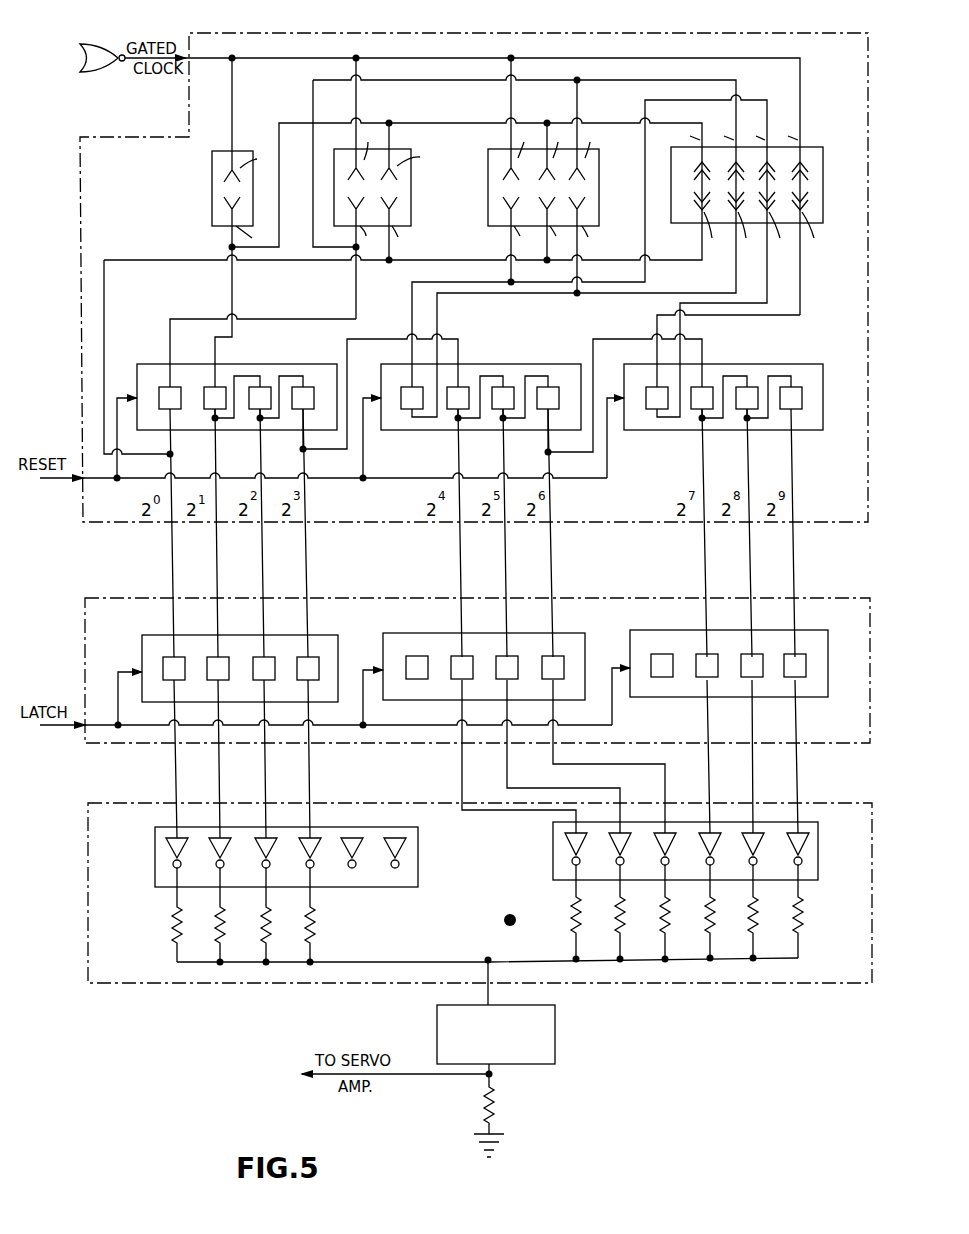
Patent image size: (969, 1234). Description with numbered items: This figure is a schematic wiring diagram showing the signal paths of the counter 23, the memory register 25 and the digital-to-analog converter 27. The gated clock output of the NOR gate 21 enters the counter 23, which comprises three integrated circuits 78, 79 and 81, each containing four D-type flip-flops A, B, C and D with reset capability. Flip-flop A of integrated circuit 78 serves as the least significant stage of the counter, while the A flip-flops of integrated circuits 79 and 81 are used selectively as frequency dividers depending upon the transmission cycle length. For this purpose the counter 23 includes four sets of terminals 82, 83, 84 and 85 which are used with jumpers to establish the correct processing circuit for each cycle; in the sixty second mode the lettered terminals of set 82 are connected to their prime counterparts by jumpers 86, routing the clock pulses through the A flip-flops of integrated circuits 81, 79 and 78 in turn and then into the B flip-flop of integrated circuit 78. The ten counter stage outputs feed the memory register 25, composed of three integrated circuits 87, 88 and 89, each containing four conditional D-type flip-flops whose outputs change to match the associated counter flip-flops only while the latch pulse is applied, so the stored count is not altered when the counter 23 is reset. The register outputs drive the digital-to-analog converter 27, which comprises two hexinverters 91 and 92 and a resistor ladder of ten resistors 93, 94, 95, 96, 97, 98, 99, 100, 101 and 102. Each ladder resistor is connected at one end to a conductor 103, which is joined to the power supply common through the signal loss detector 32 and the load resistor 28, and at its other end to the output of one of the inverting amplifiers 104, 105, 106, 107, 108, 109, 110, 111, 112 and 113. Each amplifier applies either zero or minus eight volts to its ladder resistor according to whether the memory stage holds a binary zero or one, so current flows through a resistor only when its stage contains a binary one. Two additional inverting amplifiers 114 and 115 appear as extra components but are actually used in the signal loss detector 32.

The NOR gate 21 is at (97, 75).
The counter 23 is at (566, 35).
The memory register 25 is at (100, 596).
The digital-to-analog converter 27 is at (86, 894).
The load resistor 28 is at (496, 1113).
The signal loss detector 32 is at (555, 1055).
The integrated circuit 78 is at (275, 364).
The integrated circuit 79 is at (491, 364).
The integrated circuit 81 is at (736, 364).
The set of terminals 82 is at (763, 188).
The set of terminals 83 is at (488, 192).
The set of terminals 84 is at (411, 206).
The set of terminals 85 is at (212, 187).
The jumpers 86 is at (800, 190).
The integrated circuit 87 is at (142, 636).
The integrated circuit 88 is at (385, 633).
The integrated circuit 89 is at (638, 641).
The hexinverter 91 is at (551, 851).
The hexinverter 92 is at (418, 848).
The ladder resistor 93 is at (803, 918).
The ladder resistor 94 is at (758, 918).
The ladder resistor 95 is at (715, 918).
The ladder resistor 96 is at (670, 918).
The ladder resistor 97 is at (625, 918).
The ladder resistor 98 is at (581, 918).
The ladder resistor 99 is at (315, 932).
The ladder resistor 100 is at (271, 925).
The ladder resistor 101 is at (225, 925).
The ladder resistor 102 is at (182, 925).
The conductor 103 is at (412, 960).
The inverting amplifier 104 is at (803, 842).
The inverting amplifier 105 is at (758, 842).
The inverting amplifier 106 is at (715, 842).
The inverting amplifier 107 is at (670, 842).
The inverting amplifier 108 is at (625, 842).
The inverting amplifier 109 is at (581, 842).
The inverting amplifier 110 is at (315, 846).
The inverting amplifier 111 is at (271, 846).
The inverting amplifier 112 is at (225, 846).
The inverting amplifier 113 is at (182, 846).
The inverting amplifier 114 is at (400, 848).
The inverting amplifier 115 is at (357, 846).